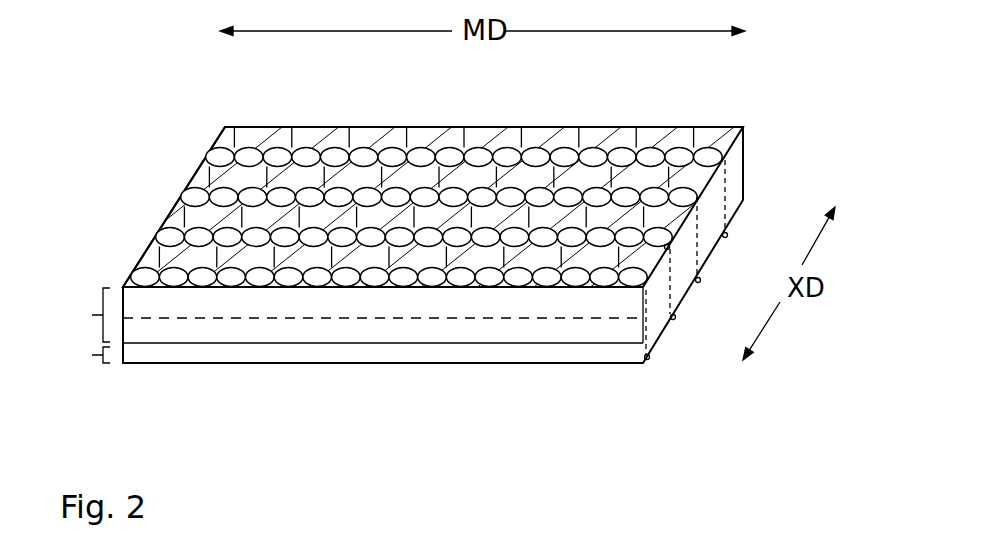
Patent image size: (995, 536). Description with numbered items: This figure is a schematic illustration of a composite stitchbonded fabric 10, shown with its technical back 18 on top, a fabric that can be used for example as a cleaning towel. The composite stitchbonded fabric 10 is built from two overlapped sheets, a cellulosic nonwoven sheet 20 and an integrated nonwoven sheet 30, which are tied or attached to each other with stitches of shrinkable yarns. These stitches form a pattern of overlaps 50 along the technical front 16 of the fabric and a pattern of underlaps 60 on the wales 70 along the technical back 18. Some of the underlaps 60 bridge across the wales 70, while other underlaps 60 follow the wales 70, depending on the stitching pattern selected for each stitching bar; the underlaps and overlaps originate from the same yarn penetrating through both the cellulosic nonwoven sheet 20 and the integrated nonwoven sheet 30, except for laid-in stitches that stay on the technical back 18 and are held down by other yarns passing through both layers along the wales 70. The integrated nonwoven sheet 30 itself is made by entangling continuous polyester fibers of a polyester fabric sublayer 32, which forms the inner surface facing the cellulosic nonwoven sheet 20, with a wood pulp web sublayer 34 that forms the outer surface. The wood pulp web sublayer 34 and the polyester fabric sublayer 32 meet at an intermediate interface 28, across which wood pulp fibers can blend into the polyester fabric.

The composite stitchbonded fabric 10 is at (212, 95).
The technical front 16 is at (430, 372).
The technical back 18 is at (412, 122).
The cellulosic nonwoven sheet 20 is at (92, 355).
The intermediate interface 28 is at (493, 318).
The integrated nonwoven sheet 30 is at (92, 315).
The polyester fabric sublayer 32 is at (560, 332).
The wood pulp web sublayer 34 is at (603, 305).
The overlaps 50 is at (701, 280).
The underlaps 60 is at (622, 206).
The wales 70 is at (192, 197).